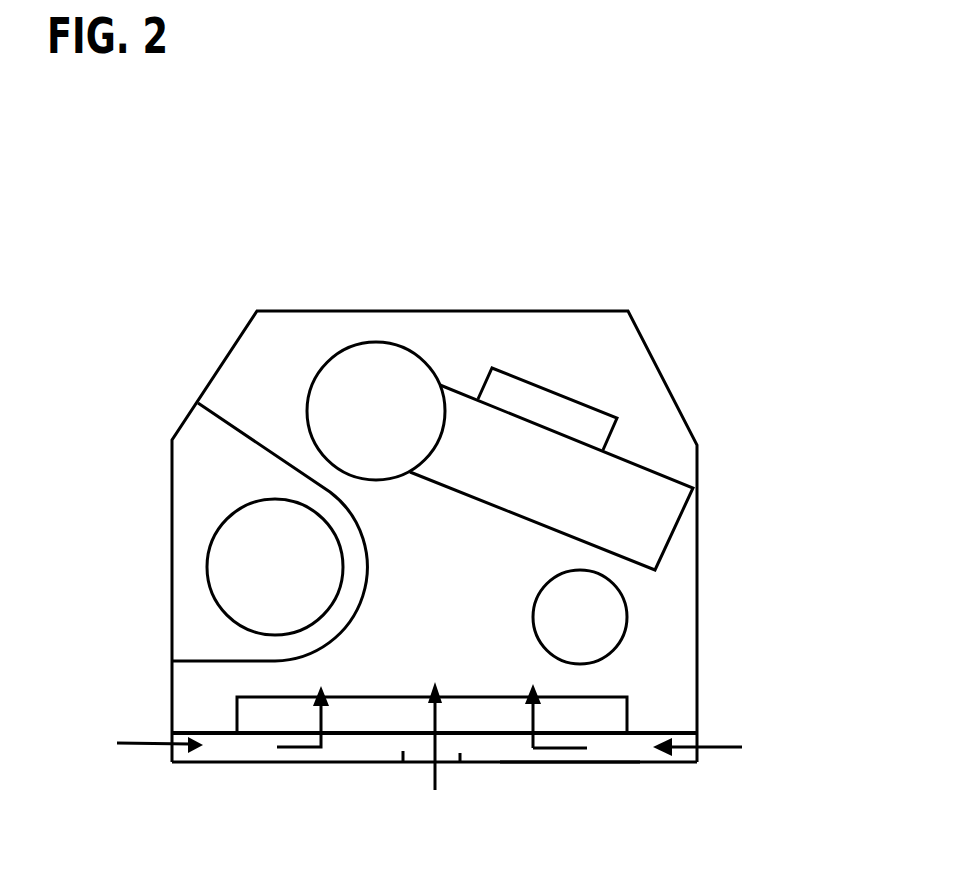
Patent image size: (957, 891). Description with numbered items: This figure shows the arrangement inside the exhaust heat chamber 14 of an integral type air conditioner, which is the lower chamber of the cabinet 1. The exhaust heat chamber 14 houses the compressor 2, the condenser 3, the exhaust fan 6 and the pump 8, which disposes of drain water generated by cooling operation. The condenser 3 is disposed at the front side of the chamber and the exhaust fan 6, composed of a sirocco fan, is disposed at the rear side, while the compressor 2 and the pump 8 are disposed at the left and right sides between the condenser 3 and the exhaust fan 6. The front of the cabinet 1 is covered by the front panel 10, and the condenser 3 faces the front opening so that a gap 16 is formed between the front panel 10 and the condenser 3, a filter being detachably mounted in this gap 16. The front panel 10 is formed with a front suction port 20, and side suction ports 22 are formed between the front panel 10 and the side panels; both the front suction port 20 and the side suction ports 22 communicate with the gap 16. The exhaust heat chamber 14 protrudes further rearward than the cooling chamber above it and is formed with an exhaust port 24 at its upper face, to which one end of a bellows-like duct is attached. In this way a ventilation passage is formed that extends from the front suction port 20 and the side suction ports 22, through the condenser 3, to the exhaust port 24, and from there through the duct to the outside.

The cabinet 1 is at (686, 344).
The compressor 2 is at (242, 563).
The condenser 3 is at (602, 712).
The exhaust fan 6 is at (513, 402).
The pump 8 is at (590, 615).
The front panel 10 is at (562, 762).
The exhaust heat chamber 14 is at (260, 393).
The gap 16 is at (257, 755).
The front suction port 20 is at (418, 763).
The side suction ports 22 is at (170, 745).
The exhaust port 24 is at (383, 422).